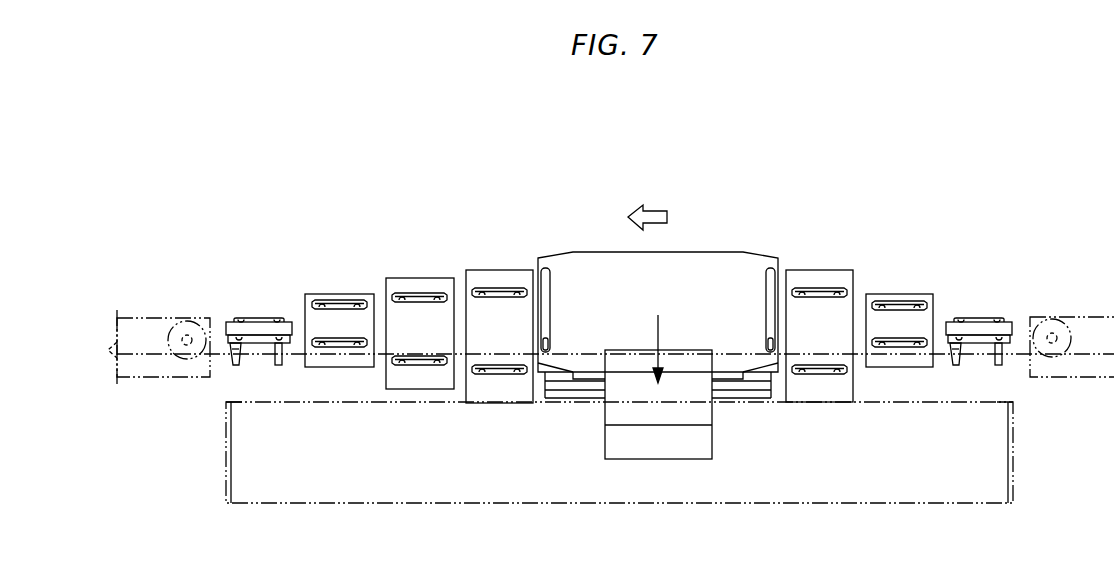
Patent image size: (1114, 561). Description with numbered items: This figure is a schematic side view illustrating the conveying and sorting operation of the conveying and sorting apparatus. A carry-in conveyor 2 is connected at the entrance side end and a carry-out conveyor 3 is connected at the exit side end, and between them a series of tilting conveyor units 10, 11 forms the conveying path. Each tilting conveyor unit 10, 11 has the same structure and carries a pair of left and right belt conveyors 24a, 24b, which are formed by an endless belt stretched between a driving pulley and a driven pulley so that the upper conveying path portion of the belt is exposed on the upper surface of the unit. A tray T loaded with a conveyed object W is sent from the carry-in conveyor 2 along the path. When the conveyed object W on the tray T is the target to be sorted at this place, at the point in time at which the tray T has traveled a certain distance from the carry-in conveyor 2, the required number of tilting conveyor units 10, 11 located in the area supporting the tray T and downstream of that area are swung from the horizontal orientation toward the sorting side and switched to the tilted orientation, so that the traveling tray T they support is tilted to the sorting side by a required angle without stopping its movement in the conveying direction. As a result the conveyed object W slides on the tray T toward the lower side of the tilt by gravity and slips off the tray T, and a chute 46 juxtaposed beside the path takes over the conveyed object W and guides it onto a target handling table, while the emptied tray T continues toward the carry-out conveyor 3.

The carry-in conveyor 2 is at (1090, 318).
The carry-out conveyor 3 is at (160, 318).
The tilting conveyor unit 10 is at (500, 272).
The tilting conveyor unit 11 is at (385, 289).
The belt conveyor 24a is at (490, 375).
The belt conveyor 24b is at (490, 290).
The chute 46 is at (852, 472).
The tray T is at (592, 272).
The conveyed object W is at (685, 375).